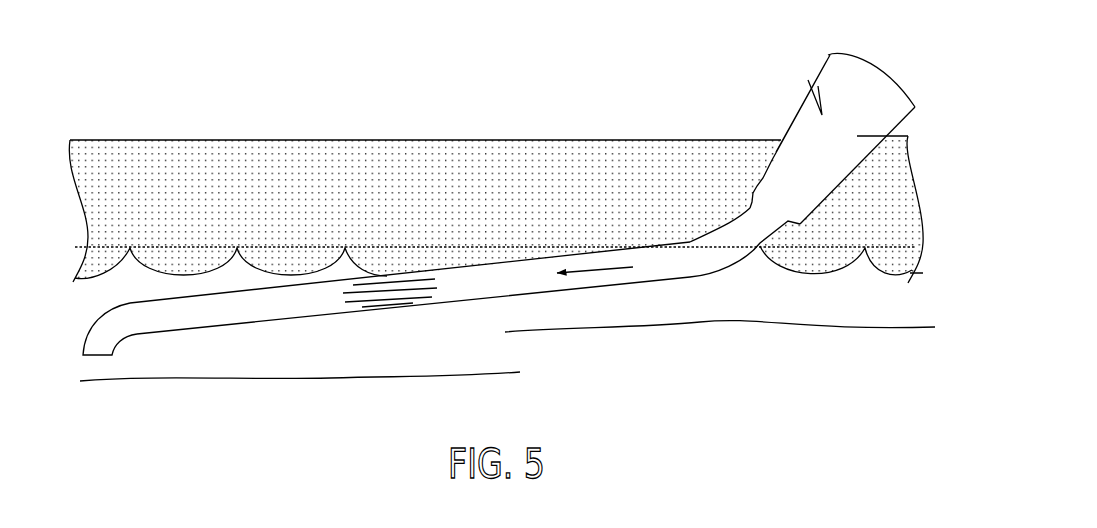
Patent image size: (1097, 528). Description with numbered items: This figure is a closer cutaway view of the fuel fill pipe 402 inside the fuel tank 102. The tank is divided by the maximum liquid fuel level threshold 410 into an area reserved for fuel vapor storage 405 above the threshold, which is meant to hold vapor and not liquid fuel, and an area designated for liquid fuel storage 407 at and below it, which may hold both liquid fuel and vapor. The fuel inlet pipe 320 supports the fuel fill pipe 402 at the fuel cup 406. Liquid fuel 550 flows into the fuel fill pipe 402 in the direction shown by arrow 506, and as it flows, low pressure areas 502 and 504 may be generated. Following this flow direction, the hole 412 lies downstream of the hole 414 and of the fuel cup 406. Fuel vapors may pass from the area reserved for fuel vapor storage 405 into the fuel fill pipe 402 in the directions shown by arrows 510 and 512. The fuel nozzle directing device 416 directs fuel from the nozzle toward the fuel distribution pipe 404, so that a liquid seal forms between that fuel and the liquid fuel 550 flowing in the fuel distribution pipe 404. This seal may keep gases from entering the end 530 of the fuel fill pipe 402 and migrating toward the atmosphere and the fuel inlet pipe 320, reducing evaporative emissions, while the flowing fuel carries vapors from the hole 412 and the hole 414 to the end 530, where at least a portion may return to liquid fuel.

The fuel tank 102 is at (230, 140).
The fuel inlet pipe 320 is at (772, 138).
The fuel fill pipe 402 is at (499, 193).
The fuel distribution pipe 404 is at (394, 310).
The area reserved for fuel vapor storage 405 is at (432, 201).
The fuel cup 406 is at (806, 160).
The area designated for liquid fuel storage 407 is at (525, 371).
The maximum liquid fuel level threshold 410 is at (143, 247).
The hole 412 is at (723, 208).
The hole 414 is at (757, 163).
The fuel nozzle directing device 416 is at (817, 103).
The low pressure area 502 is at (780, 162).
The low pressure area 504 is at (758, 203).
The arrow 506 is at (596, 272).
The arrow 510 is at (205, 162).
The arrow 512 is at (750, 220).
The end of fuel fill pipe 530 is at (102, 356).
The liquid fuel 550 is at (188, 279).